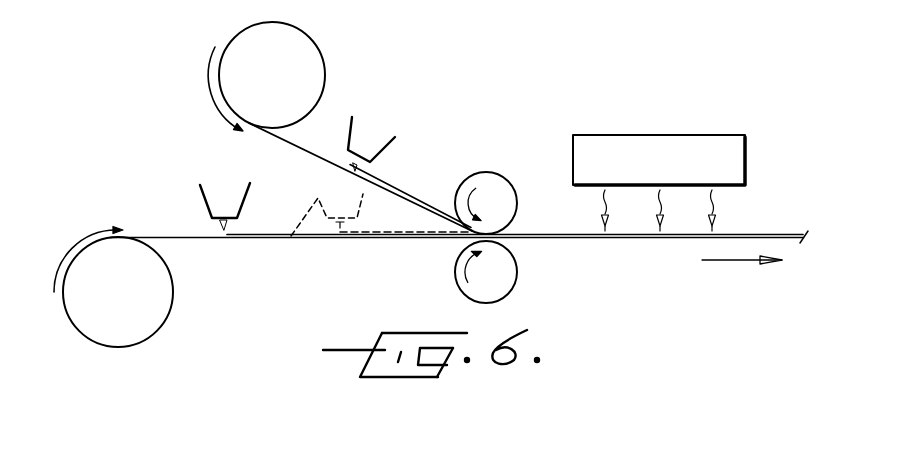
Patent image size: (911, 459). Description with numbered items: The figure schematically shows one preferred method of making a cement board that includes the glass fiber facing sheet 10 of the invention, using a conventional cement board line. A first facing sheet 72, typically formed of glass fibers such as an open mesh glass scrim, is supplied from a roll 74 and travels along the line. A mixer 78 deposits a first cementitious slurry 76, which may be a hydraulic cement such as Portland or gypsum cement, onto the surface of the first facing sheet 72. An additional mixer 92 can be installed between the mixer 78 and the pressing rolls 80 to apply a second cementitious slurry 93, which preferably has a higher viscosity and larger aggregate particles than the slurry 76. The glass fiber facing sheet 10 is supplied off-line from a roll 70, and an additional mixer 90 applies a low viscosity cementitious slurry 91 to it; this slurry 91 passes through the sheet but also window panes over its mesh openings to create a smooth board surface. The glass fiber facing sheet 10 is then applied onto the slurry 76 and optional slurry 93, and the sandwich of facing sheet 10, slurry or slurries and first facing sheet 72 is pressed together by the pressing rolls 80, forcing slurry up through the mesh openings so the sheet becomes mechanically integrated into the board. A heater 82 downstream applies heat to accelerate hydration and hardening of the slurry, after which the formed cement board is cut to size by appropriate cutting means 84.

The glass fiber facing sheet 10 is at (412, 200).
The roll 70 is at (290, 75).
The first facing sheet 72 is at (195, 237).
The roll 74 is at (128, 332).
The first cementitious slurry 76 is at (272, 235).
The mixer 78 is at (220, 195).
The pressing rolls 80 is at (488, 257).
The heater 82 is at (648, 135).
The cutting means 84 is at (797, 238).
The additional mixer 90 is at (350, 137).
The low viscosity cementitious slurry 91 is at (393, 192).
The mixer 92 is at (291, 239).
The second cementitious slurry 93 is at (390, 233).